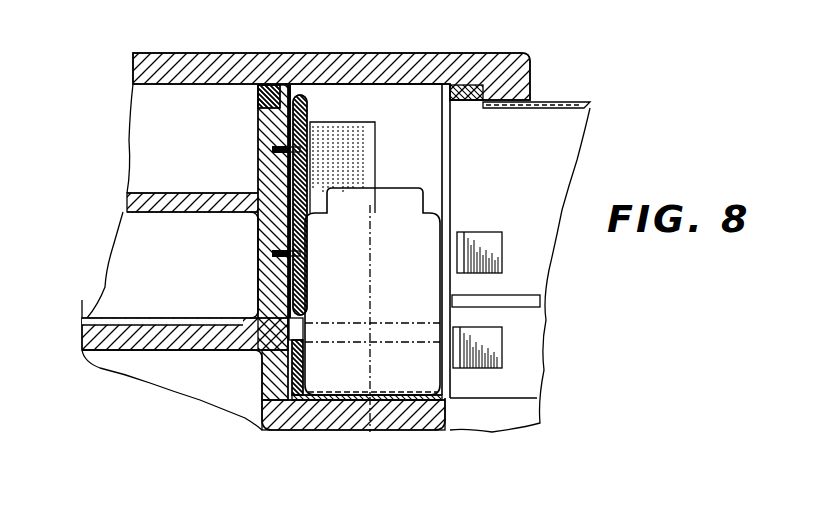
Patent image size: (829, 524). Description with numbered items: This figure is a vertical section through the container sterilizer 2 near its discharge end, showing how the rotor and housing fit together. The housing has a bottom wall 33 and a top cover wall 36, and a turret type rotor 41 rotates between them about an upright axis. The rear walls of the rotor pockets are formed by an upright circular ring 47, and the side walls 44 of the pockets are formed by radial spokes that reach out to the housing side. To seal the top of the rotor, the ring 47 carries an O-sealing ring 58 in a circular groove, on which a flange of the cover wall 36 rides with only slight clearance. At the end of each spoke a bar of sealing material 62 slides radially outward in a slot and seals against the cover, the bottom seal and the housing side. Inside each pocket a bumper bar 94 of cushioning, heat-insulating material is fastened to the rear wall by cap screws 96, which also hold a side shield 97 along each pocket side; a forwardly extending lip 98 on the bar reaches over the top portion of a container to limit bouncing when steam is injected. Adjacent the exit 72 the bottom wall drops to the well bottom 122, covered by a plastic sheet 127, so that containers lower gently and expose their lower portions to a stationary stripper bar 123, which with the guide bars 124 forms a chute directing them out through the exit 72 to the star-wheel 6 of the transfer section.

The container sterilizer 2 is at (267, 52).
The star-wheel 6 is at (522, 300).
The bottom wall 33 is at (83, 335).
The top cover wall 36 is at (202, 37).
The rotor 41 is at (191, 179).
The side walls 44 is at (414, 168).
The circular ring 47 is at (257, 253).
The O-sealing ring 58 is at (260, 103).
The bar of sealing material 62 is at (450, 177).
The exit 72 is at (453, 309).
The bumper bar 94 is at (307, 180).
The cap screws 96 is at (271, 152).
The side shield 97 is at (362, 127).
The lip 98 is at (302, 127).
The well bottom 122 is at (355, 422).
The stripper bar 123 is at (290, 360).
The guide bars 124 is at (478, 237).
The sheet of plastic material 127 is at (320, 403).